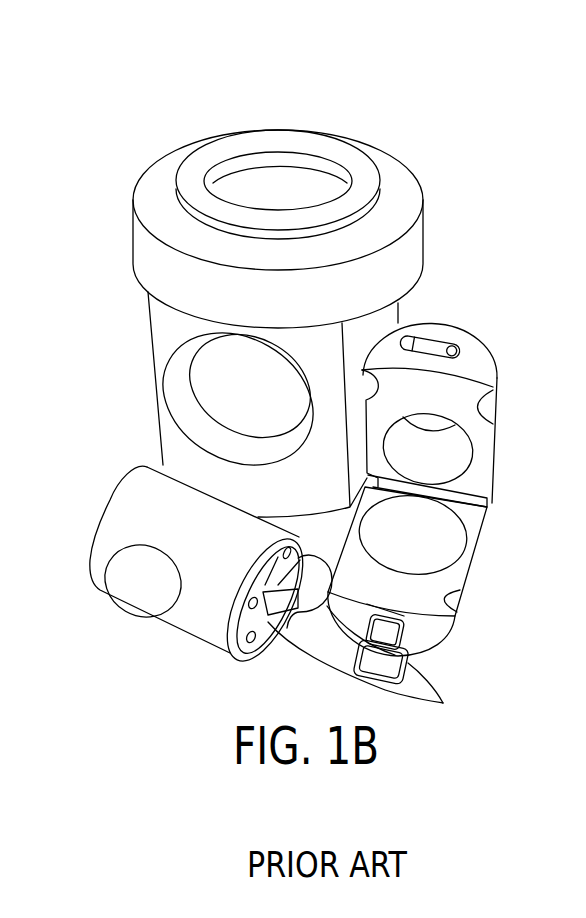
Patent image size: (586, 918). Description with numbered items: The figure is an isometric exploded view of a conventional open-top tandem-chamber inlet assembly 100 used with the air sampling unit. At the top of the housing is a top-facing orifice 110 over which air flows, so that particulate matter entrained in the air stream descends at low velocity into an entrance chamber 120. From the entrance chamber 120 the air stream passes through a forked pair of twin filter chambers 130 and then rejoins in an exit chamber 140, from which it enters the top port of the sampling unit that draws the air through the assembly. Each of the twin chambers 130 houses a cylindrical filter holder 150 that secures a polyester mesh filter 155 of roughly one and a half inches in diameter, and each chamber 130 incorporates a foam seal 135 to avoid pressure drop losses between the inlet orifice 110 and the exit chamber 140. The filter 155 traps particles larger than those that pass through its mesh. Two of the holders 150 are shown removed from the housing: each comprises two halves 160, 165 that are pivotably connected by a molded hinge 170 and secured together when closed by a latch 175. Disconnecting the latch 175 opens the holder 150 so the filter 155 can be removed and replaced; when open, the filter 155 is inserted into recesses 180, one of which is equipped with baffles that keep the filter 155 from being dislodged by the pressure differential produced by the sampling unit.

The open-top tandem-chamber inlet assembly 100 is at (130, 132).
The top-facing orifice 110 is at (368, 167).
The entrance chamber 120 is at (282, 171).
The twin filter chambers 130 is at (236, 380).
The foam seal 135 is at (187, 390).
The exit chamber 140 is at (308, 509).
The cylindrical filter holder 150 is at (476, 323).
The polyester mesh filter 155 is at (453, 547).
The first half of filter holder 160 is at (493, 386).
The second half of filter holder 165 is at (473, 523).
The molded hinge 170 is at (480, 488).
The latch 175 is at (463, 353).
The recesses 180 is at (453, 440).